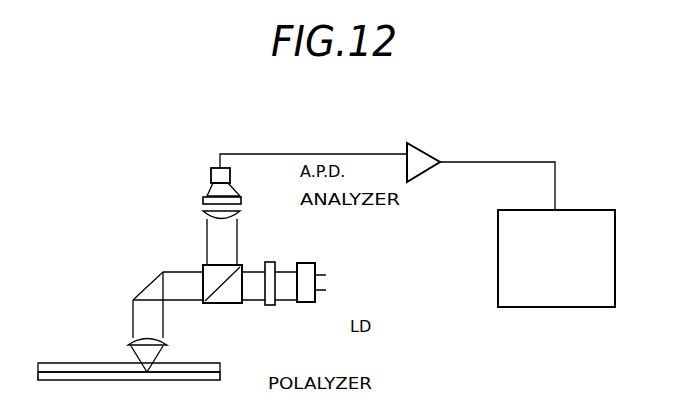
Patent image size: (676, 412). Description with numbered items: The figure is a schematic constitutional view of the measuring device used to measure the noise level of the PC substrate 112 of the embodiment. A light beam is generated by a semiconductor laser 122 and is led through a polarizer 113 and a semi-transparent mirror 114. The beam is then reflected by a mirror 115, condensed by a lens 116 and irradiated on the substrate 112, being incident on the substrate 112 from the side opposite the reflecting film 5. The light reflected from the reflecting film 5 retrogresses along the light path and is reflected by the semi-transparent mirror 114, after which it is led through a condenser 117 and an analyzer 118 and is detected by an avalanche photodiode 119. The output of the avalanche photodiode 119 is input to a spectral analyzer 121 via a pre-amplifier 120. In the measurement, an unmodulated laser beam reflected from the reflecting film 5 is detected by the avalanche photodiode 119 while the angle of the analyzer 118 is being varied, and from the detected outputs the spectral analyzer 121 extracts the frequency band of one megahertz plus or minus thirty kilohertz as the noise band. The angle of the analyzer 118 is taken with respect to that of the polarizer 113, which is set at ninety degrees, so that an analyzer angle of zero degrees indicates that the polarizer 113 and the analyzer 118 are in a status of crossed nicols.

The reflecting film 5 is at (175, 380).
The PC substrate 112 is at (67, 363).
The polarizer 113 is at (265, 368).
The semi-transparent mirror 114 is at (222, 305).
The mirror 115 is at (162, 268).
The lens 116 is at (166, 340).
The condenser 117 is at (240, 214).
The analyzer 118 is at (241, 200).
The avalanche photodiode (APD) 119 is at (231, 176).
The pre-amplifier 120 is at (424, 135).
The spectral analyzer 121 is at (545, 307).
The semiconductor laser 122 is at (307, 302).